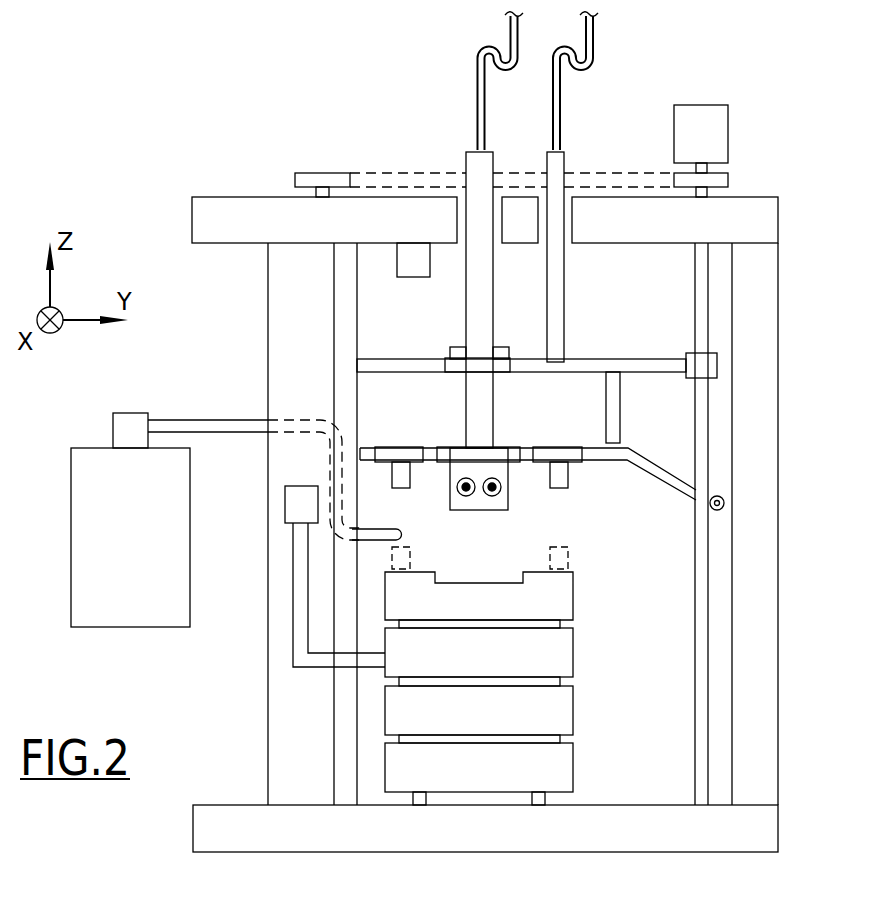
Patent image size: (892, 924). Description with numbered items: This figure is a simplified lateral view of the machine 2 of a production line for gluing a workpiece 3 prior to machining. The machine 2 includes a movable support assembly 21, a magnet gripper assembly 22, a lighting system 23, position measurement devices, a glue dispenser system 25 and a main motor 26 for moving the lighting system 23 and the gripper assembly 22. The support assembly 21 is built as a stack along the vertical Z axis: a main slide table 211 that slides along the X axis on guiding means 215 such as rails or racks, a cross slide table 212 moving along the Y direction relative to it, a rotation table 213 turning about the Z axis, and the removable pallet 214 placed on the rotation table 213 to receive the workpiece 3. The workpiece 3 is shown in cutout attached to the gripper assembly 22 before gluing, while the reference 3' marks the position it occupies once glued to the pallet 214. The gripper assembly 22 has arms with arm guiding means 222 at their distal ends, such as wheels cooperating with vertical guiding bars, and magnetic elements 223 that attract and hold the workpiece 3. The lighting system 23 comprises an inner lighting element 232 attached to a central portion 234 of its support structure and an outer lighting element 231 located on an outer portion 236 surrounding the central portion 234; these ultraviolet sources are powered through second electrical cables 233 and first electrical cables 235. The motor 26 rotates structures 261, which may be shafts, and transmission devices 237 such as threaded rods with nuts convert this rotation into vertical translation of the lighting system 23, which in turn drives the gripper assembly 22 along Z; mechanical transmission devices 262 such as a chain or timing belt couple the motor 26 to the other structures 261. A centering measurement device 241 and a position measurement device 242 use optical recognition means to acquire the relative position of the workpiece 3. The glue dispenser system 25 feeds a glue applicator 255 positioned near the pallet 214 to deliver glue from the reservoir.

The machine 2 is at (100, 146).
The workpiece 3 is at (433, 476).
The glued position of the workpiece 3' is at (603, 572).
The movable support assembly 21 is at (609, 739).
The main slide table 211 is at (550, 760).
The cross slide table 212 is at (550, 705).
The rotation table 213 is at (548, 653).
The removable pallet 214 is at (547, 592).
The guiding means 215 is at (419, 808).
The magnet gripper assembly 22 is at (665, 465).
The arm guiding means 222 is at (725, 505).
The magnetic elements 223 is at (400, 448).
The lighting system 23 is at (612, 287).
The outer lighting element 231 is at (615, 405).
The inner lighting element 232 is at (493, 510).
The second electrical cables 233 is at (478, 86).
The central portion of the support structure 234 is at (478, 300).
The first electrical cables 235 is at (555, 127).
The outer portion of the support structure 236 is at (580, 365).
The transmission devices 237 is at (705, 365).
The centering measurement device 241 is at (300, 498).
The position measurement device 242 is at (413, 258).
The glue dispenser system 25 is at (46, 497).
The glue applicator 255 is at (392, 537).
The main motor 26 is at (705, 133).
The structures 261 is at (702, 733).
The mechanical transmission devices 262 is at (374, 178).